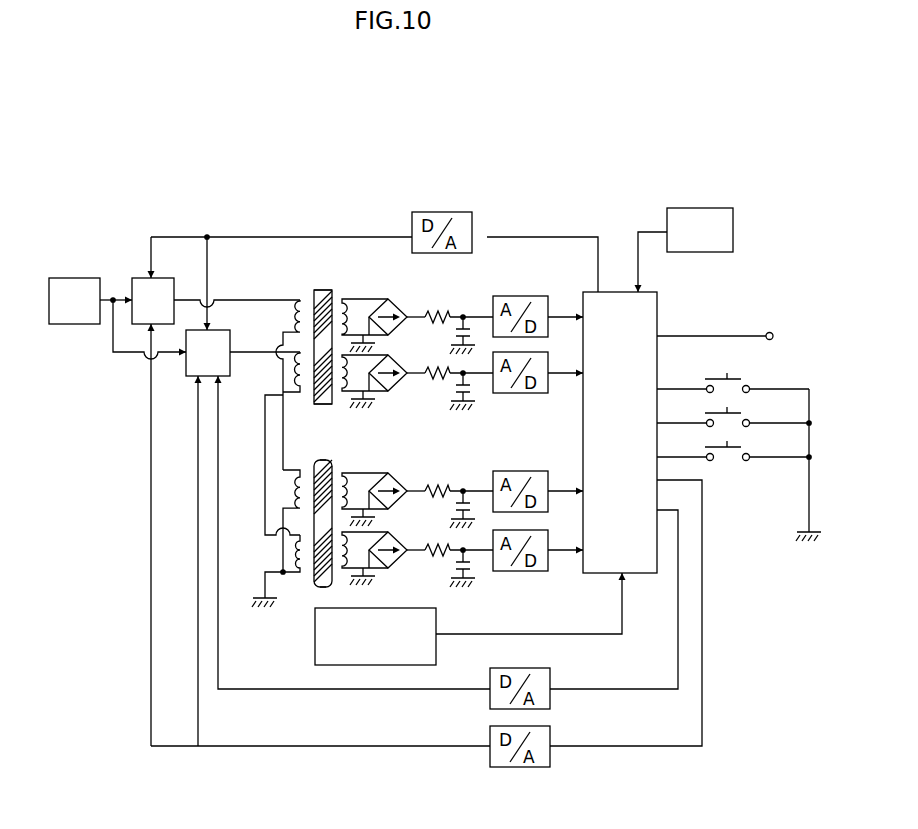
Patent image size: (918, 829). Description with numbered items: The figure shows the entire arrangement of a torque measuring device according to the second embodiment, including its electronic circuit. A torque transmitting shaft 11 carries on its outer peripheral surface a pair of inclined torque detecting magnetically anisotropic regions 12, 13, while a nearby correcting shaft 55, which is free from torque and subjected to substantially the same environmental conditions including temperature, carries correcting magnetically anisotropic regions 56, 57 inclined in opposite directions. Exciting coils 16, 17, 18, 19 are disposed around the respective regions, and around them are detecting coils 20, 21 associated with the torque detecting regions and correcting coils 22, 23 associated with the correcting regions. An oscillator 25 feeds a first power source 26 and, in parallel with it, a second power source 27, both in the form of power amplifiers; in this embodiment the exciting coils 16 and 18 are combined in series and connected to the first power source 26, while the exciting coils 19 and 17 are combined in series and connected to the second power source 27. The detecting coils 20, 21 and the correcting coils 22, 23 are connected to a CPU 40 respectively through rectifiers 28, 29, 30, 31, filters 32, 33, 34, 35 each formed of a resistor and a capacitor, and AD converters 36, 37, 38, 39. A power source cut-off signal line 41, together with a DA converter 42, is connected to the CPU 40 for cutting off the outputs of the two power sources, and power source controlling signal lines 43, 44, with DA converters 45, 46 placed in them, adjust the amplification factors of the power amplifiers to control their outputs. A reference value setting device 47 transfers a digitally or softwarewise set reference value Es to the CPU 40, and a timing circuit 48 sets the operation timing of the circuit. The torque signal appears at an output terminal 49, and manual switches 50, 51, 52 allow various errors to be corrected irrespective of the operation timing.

The torque transmitting shaft 11 is at (318, 462).
The torque detecting magnetically anisotropic region 12 is at (326, 462).
The torque detecting magnetically anisotropic region 13 is at (316, 584).
The exciting coil 16 is at (298, 491).
The exciting coil 17 is at (296, 554).
The exciting coil 18 is at (296, 319).
The exciting coil 19 is at (296, 376).
The detecting coil 20 is at (347, 486).
The detecting coil 21 is at (352, 572).
The correcting coil 22 is at (345, 315).
The correcting coil 23 is at (355, 384).
The oscillator 25 is at (81, 278).
The first power source 26 is at (140, 278).
The second power source 27 is at (188, 376).
The rectifier 28 is at (396, 307).
The rectifier 29 is at (398, 480).
The rectifier 30 is at (397, 538).
The rectifier 31 is at (399, 367).
The filter 32 is at (460, 311).
The filter 33 is at (462, 486).
The filter 34 is at (462, 564).
The filter 35 is at (460, 370).
The AD converter 36 is at (512, 296).
The AD converter 37 is at (512, 471).
The AD converter 38 is at (538, 571).
The AD converter 39 is at (532, 393).
The CPU 40 is at (590, 292).
The power source cut-off signal line 41 is at (357, 236).
The DA converter 42 is at (460, 212).
The power source controlling signal line 43 is at (460, 689).
The power source controlling signal line 44 is at (446, 746).
The DA converter 45 is at (524, 668).
The DA converter 46 is at (519, 767).
The reference value setting device 47 is at (374, 665).
The timing circuit 48 is at (728, 208).
The output terminal 49 is at (771, 333).
The manual switch 50 is at (746, 374).
The manual switch 51 is at (746, 406).
The manual switch 52 is at (746, 440).
The correcting shaft 55 is at (316, 292).
The correcting magnetically anisotropic region 56 is at (326, 291).
The correcting magnetically anisotropic region 57 is at (333, 402).